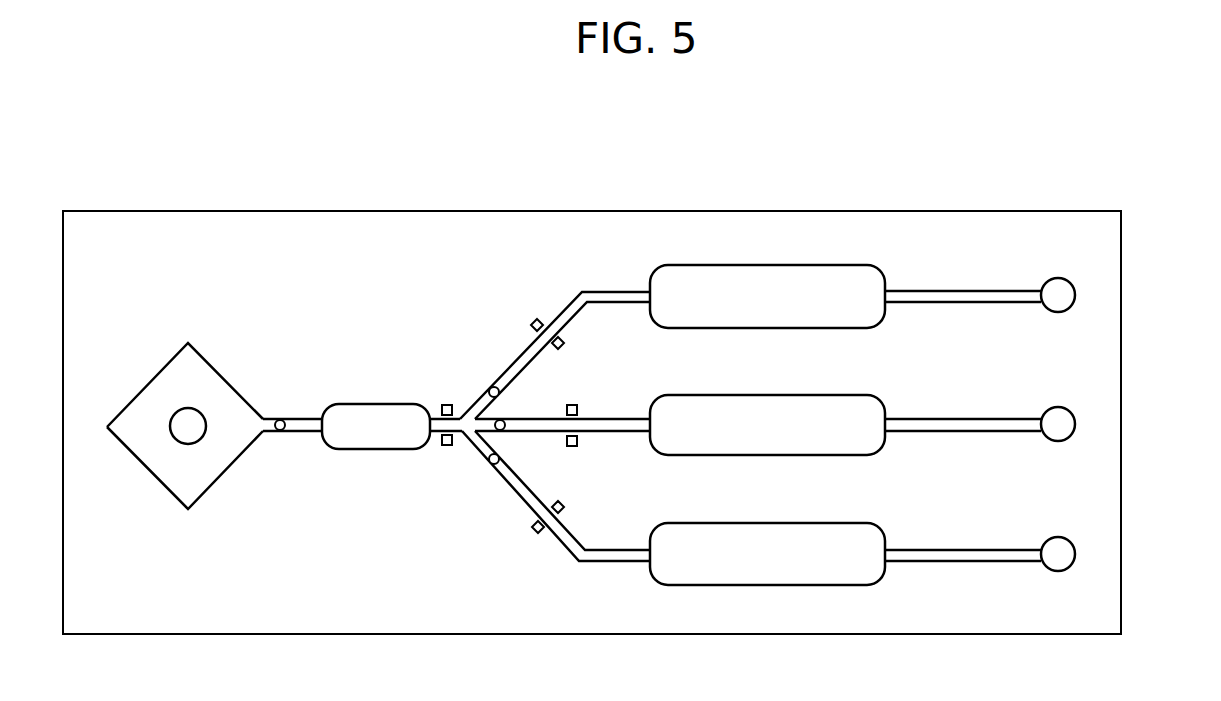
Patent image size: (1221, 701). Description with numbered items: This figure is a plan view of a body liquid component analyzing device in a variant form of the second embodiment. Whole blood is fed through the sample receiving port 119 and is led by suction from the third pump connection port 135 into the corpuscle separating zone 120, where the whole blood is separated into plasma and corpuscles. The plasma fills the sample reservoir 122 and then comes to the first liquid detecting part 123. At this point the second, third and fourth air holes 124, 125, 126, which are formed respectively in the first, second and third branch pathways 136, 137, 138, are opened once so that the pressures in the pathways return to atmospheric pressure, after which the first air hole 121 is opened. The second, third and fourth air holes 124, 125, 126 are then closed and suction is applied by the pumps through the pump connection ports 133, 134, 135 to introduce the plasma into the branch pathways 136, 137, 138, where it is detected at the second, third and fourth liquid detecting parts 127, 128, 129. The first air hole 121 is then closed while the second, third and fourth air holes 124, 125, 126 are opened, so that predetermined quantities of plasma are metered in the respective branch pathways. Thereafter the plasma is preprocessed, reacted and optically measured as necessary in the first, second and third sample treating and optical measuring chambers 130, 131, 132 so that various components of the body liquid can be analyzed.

The sample receiving port 119 is at (187, 427).
The corpuscle separating zone 120 is at (170, 475).
The first air hole 121 is at (275, 433).
The sample reservoir 122 is at (362, 422).
The first liquid detecting part 123 is at (447, 449).
The second air hole 124 is at (490, 385).
The third air hole 125 is at (512, 418).
The fourth air hole 126 is at (492, 462).
The second liquid detecting part 127 is at (537, 320).
The third liquid detecting part 128 is at (577, 448).
The fourth liquid detecting part 129 is at (537, 532).
The first sample treating and optical measuring chamber 130 is at (827, 282).
The second sample treating and optical measuring chamber 131 is at (788, 440).
The third sample treating and optical measuring chamber 132 is at (838, 580).
The first pump connection port 133 is at (1075, 293).
The second pump connection port 134 is at (1075, 422).
The third pump connection port 135 is at (1075, 552).
The first branch pathway 136 is at (617, 292).
The second branch pathway 137 is at (603, 422).
The third branch pathway 138 is at (617, 553).